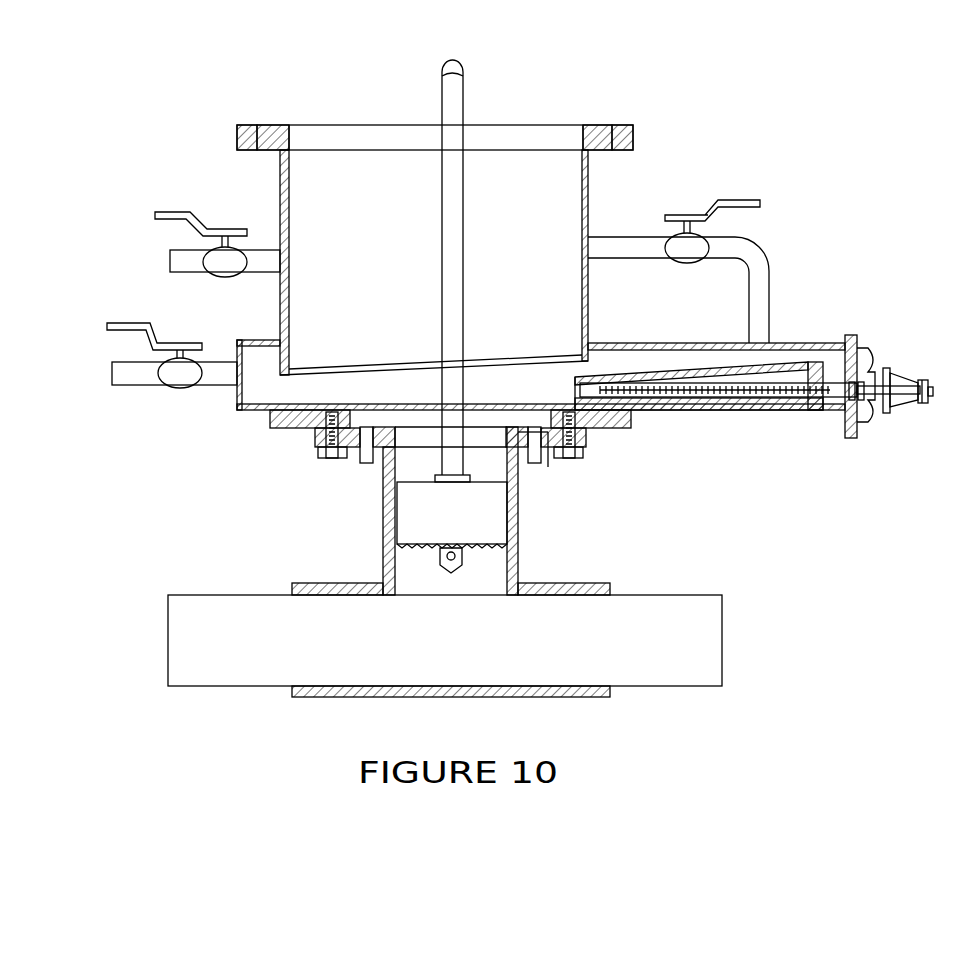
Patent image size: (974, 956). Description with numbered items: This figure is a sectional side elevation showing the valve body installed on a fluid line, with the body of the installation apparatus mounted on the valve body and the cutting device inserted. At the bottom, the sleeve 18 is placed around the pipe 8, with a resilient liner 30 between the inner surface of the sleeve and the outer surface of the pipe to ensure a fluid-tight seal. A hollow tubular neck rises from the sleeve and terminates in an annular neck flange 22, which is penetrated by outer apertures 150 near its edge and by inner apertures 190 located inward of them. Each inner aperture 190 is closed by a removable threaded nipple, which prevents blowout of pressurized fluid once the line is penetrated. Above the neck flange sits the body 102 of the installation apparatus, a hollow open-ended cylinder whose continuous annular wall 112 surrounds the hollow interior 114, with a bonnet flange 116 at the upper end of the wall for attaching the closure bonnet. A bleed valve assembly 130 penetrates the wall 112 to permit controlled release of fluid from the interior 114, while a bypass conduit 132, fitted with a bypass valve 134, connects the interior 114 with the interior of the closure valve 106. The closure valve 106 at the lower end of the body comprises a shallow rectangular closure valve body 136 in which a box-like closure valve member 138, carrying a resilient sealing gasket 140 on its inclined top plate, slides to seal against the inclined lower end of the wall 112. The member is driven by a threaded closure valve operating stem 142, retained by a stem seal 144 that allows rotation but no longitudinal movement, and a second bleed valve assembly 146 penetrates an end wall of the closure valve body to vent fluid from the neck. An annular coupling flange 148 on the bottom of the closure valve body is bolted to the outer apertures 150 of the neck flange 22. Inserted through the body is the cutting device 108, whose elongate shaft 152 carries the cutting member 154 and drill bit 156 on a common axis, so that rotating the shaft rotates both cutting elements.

The pipe 8 is at (478, 640).
The sleeve 18 is at (526, 603).
The neck flange 22 is at (637, 453).
The resilient liner 30 is at (498, 566).
The body 102 is at (719, 187).
The closure valve 106 is at (541, 351).
The cutting device 108 is at (315, 498).
The wall 112 is at (518, 135).
The interior 114 is at (400, 249).
The bonnet flange 116 is at (476, 103).
The bleed valve assembly 130 is at (190, 209).
The bypass conduit 132 is at (742, 290).
The bypass valve 134 is at (767, 231).
The closure valve body 136 is at (704, 427).
The closure valve member 138 is at (753, 427).
The sealing gasket 140 is at (868, 375).
The closure valve operating stem 142 is at (854, 454).
The stem seal 144 is at (910, 384).
The bleed valve assembly 146 is at (160, 332).
The coupling flange 148 is at (256, 434).
The outer apertures 150 is at (213, 467).
The shaft 152 is at (526, 247).
The cutting member 154 is at (480, 528).
The drill bit 156 is at (520, 553).
The inner apertures 190 is at (598, 459).